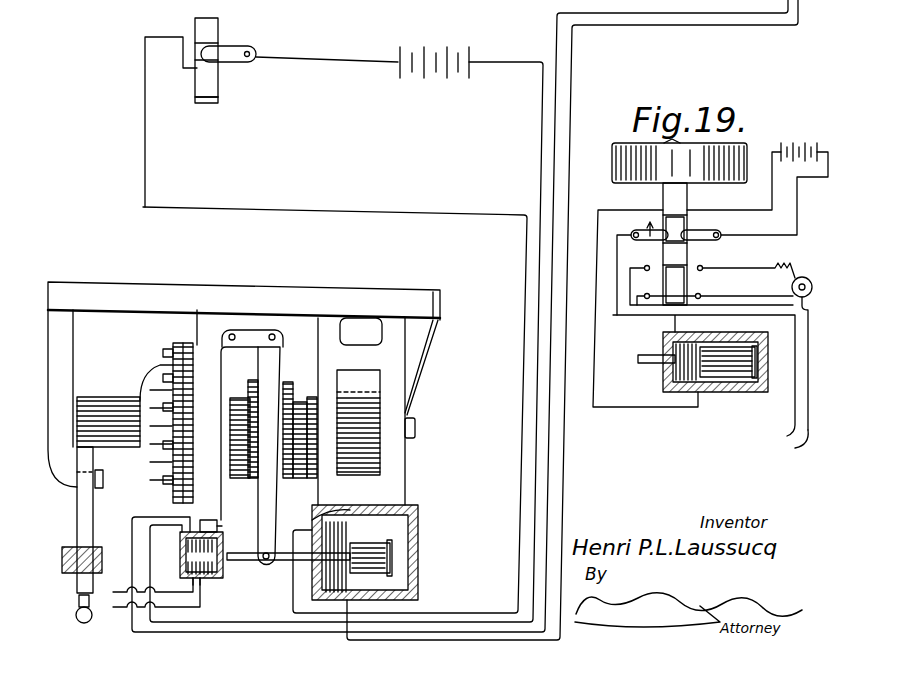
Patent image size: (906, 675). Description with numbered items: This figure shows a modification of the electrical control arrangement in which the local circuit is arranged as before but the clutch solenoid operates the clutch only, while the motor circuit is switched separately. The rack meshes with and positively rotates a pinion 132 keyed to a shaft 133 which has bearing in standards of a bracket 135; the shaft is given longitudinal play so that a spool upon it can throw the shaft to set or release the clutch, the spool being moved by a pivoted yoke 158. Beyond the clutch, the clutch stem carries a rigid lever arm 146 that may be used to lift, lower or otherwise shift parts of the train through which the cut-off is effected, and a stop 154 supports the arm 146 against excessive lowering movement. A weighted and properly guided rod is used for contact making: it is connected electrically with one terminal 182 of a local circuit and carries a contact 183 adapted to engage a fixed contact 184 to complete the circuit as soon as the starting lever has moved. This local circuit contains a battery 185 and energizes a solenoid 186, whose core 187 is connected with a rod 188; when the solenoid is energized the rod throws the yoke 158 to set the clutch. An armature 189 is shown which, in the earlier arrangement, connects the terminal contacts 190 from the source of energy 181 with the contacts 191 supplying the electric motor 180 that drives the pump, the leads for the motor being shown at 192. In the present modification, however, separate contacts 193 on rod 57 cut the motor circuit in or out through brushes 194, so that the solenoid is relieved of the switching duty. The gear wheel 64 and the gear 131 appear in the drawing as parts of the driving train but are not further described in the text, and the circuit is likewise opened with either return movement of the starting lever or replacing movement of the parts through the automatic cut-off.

The rod 57 is at (690, 250).
The gear wheel 64 is at (612, 156).
The gear 131 is at (365, 386).
The pinion 132 is at (375, 462).
The shaft 133 is at (416, 430).
The bracket 135 is at (265, 302).
The lever arm 146 is at (80, 527).
The stop 154 is at (102, 484).
The yoke 158 is at (280, 380).
The motor 180 is at (815, 296).
The source of electric energy 181 is at (808, 438).
The terminal 182 is at (195, 73).
The contact 183 is at (212, 90).
The fixed contact 184 is at (228, 64).
The battery 185 is at (443, 44).
The solenoid 186 is at (312, 528).
The solenoid core 187 is at (420, 553).
The rod 188 is at (243, 567).
The armature 189 is at (190, 565).
The terminal contact 190 is at (200, 585).
The contact 191 is at (216, 527).
The lead 192 is at (737, 0).
The contact 193 is at (690, 285).
The brush 194 is at (646, 293).